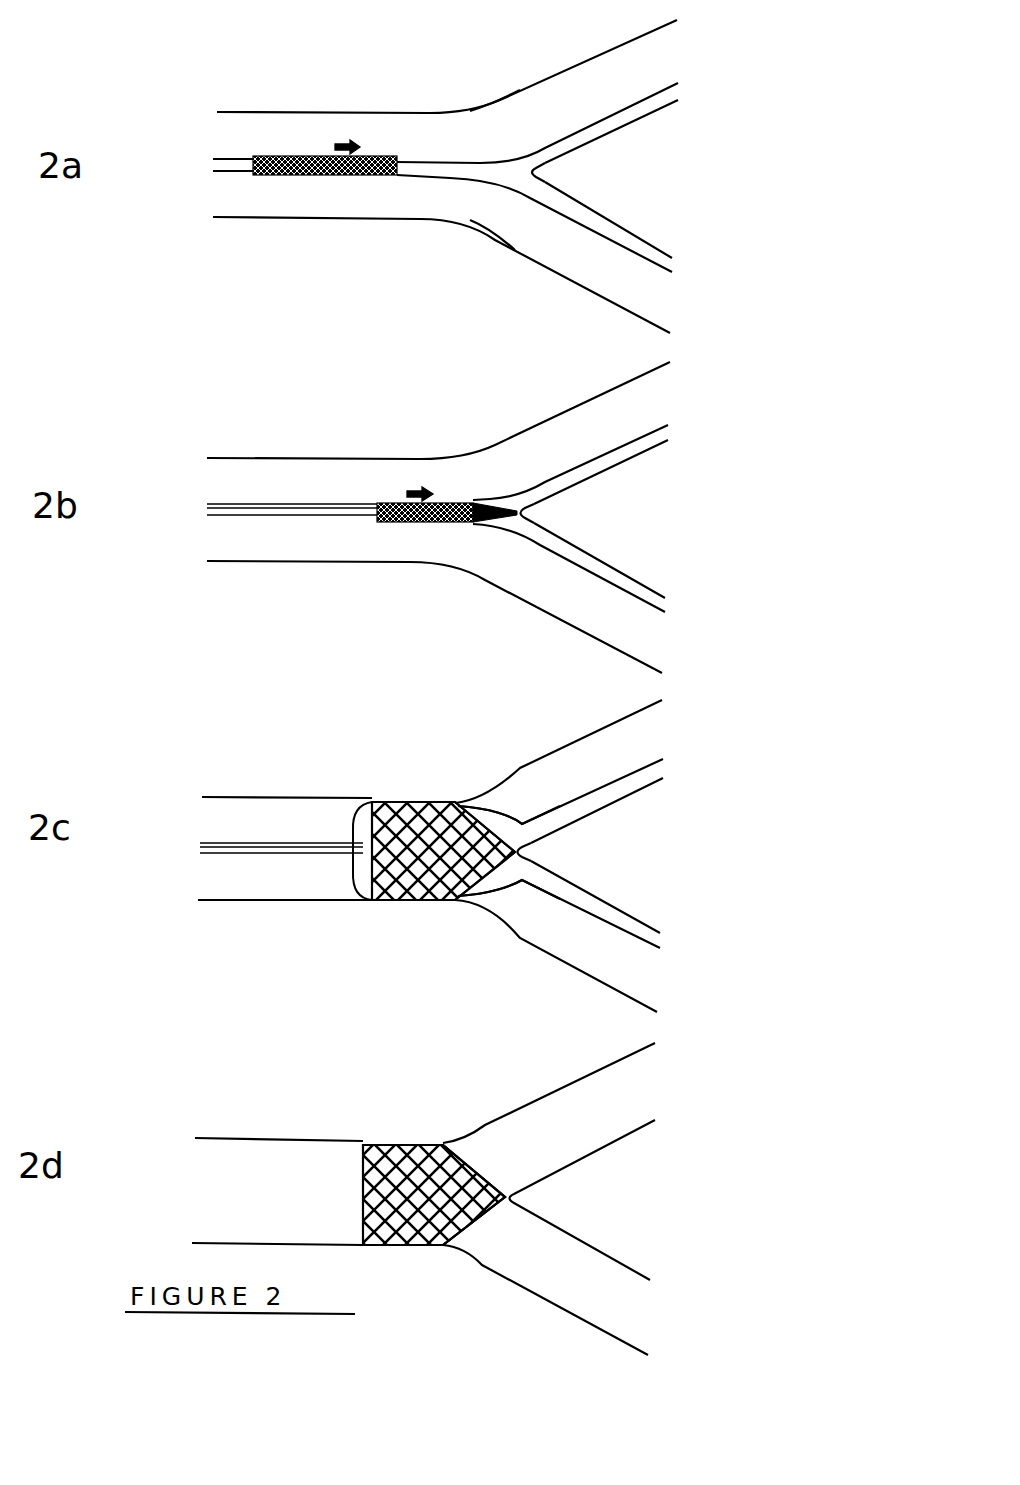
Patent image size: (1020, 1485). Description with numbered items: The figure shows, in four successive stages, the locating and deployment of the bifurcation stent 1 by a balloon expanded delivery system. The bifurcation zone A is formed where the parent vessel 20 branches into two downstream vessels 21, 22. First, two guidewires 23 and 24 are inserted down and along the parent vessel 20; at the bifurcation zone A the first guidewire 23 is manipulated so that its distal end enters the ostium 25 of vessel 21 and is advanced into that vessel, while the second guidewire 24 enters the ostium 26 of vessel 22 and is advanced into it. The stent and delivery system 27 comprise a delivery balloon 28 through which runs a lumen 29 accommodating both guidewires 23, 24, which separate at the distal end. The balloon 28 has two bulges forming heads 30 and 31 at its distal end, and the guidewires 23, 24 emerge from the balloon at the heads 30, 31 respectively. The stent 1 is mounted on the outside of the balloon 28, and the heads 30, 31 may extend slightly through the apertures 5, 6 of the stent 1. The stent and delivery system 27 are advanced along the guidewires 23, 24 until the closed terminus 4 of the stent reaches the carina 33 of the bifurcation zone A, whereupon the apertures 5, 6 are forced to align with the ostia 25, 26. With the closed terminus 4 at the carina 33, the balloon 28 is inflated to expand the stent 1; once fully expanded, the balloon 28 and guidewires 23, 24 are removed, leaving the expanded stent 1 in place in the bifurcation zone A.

The bifurcation stent 1 is at (427, 802).
The closed terminus 4 is at (500, 1185).
The first angled aperture 5 is at (482, 812).
The second angled aperture 6 is at (474, 900).
The parent vessel 20 is at (249, 110).
The first downstream vessel 21 is at (587, 57).
The second downstream vessel 22 is at (607, 301).
The first guidewire 23 is at (665, 80).
The second guidewire 24 is at (658, 272).
The ostium of first downstream vessel 25 is at (507, 125).
The ostium of second downstream vessel 26 is at (495, 200).
The stent and delivery system 27 is at (302, 182).
The delivery balloon 28 is at (362, 833).
The lumen 29 is at (270, 515).
The first balloon head 30 is at (525, 823).
The second balloon head 31 is at (522, 883).
The carina 33 is at (533, 173).
The bifurcation zone A is at (465, 135).